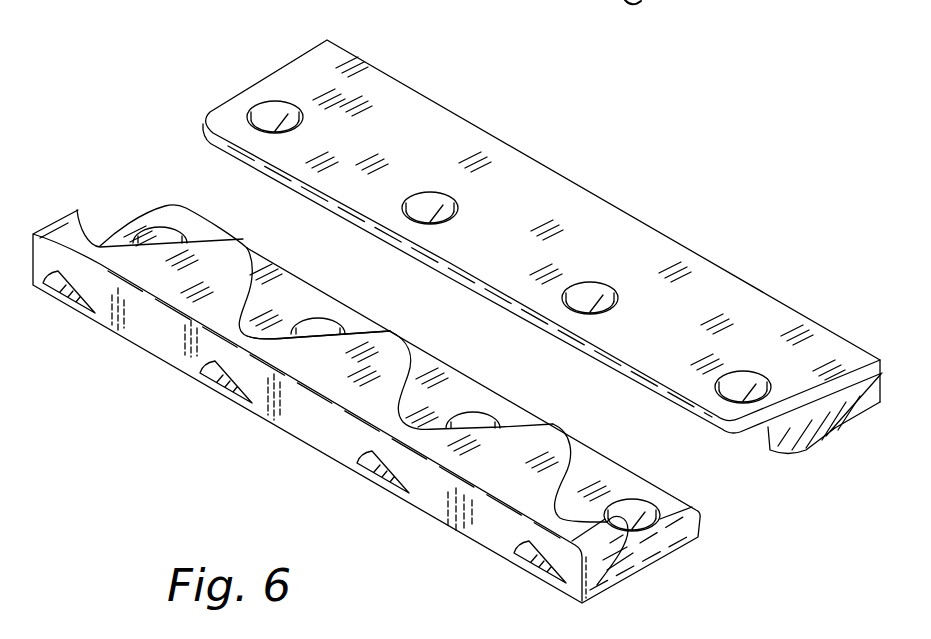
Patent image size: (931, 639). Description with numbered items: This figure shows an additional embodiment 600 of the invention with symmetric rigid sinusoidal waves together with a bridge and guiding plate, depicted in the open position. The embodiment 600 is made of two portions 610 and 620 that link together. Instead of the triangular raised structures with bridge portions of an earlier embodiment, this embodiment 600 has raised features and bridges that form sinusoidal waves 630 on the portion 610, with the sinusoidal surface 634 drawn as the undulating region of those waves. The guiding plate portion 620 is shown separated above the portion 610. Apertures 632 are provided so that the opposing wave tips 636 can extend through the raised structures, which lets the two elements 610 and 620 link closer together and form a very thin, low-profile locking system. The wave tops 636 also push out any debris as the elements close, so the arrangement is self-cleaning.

The additional embodiment 600 is at (101, 65).
The portion 610 is at (100, 170).
The portion 620 is at (251, 58).
The sinusoidal waves 630 is at (210, 263).
The apertures 632 is at (358, 467).
The trough of wave portion 634 is at (235, 340).
The wave tips 636 is at (752, 446).